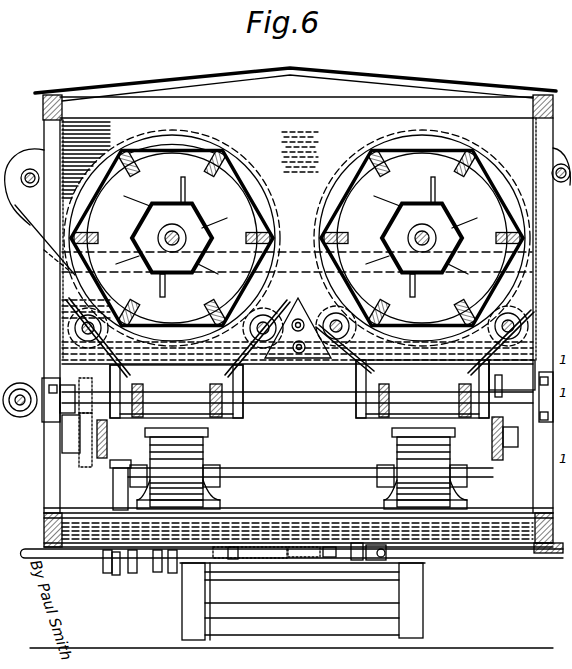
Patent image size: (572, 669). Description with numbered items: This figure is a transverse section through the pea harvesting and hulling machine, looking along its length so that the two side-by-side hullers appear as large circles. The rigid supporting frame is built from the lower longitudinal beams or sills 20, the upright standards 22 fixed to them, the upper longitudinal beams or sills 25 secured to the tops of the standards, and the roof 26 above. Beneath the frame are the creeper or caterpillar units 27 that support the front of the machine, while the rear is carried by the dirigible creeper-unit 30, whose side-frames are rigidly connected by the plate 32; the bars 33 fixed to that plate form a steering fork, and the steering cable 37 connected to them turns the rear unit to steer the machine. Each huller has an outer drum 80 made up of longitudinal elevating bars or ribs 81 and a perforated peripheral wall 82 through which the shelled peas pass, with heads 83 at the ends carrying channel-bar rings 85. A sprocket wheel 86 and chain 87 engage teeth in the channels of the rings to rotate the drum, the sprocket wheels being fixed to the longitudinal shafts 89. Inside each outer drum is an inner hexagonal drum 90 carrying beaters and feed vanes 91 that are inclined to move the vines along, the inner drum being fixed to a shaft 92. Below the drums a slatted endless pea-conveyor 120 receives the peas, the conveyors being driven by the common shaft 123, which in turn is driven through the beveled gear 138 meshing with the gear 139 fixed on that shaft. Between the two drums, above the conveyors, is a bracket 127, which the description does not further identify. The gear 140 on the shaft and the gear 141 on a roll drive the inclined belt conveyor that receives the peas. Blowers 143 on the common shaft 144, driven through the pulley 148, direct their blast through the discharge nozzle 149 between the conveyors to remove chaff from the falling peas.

The longitudinal beams or sills 20 is at (44, 527).
The standards 22 is at (44, 324).
The upper longitudinal beams or sills 25 is at (44, 97).
The roof 26 is at (429, 80).
The creeper or caterpillar units 27 is at (324, 526).
The dirigible creeper-unit 30 is at (291, 605).
The plate 32 is at (358, 561).
The bars 33 is at (233, 561).
The steering cable 37 is at (145, 560).
The outer drum 80 is at (364, 143).
The longitudinal elevating bars or ribs 81 is at (238, 161).
The perforated peripheral wall 82 is at (152, 149).
The heads 83 is at (429, 128).
The channel-bar rings 85 is at (213, 141).
The sprocket wheel 86 is at (25, 158).
The chain 87 is at (44, 248).
The longitudinal shafts 89 is at (44, 232).
The inner hexagonal drum 90 is at (158, 206).
The beaters and feed vanes 91 is at (435, 190).
The shaft 92 is at (197, 213).
The slatted endless pea-conveyor 120 is at (297, 389).
The common shaft 123 is at (322, 397).
The center bracket 127 is at (312, 352).
The beveled gear 138 is at (19, 383).
The gear 139 is at (42, 420).
The gear 140 is at (84, 388).
The gear 141 is at (78, 464).
The blowers 143 is at (298, 472).
The common shaft 144 is at (319, 470).
The pulley 148 is at (118, 482).
The discharge nozzle 149 is at (210, 433).